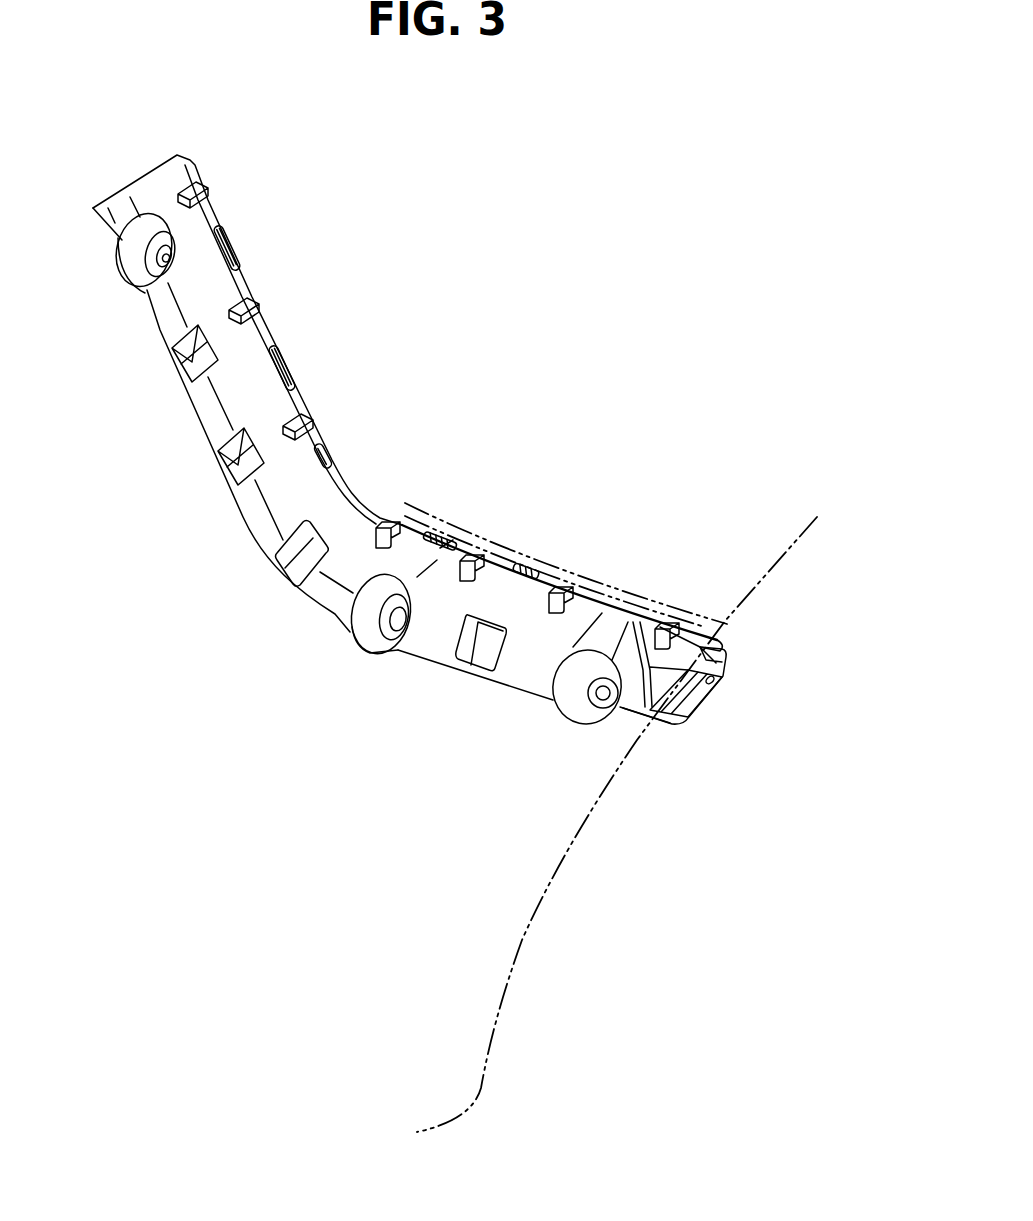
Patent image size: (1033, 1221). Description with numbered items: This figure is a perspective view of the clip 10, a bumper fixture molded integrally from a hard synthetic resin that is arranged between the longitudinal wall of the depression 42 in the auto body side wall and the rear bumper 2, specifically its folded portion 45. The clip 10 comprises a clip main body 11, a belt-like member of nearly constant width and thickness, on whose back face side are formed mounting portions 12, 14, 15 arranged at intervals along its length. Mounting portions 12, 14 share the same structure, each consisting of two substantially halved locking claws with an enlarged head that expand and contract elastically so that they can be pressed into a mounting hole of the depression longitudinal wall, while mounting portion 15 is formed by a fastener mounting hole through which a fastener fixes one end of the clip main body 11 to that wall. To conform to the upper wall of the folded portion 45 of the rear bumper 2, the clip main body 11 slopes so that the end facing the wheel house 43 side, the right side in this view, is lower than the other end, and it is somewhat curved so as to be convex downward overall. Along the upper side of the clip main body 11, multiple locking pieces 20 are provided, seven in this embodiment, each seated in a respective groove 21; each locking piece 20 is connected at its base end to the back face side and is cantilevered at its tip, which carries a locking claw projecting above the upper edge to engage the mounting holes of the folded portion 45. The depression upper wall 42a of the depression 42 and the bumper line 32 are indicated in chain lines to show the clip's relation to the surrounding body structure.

The clip 10 is at (455, 351).
The clip main body 11 is at (258, 527).
The mounting portion 12 is at (163, 259).
The mounting portion 14 is at (398, 620).
The mounting portion 15 is at (597, 697).
The locking piece 20 is at (255, 300).
The groove 21 is at (180, 192).
The depression upper wall 42a is at (448, 522).
The depression 42 is at (566, 500).
The wheel house 43 is at (777, 563).
The rear bumper 2 is at (507, 910).
The folded portion 45 is at (617, 824).
The bumper 32 is at (517, 967).